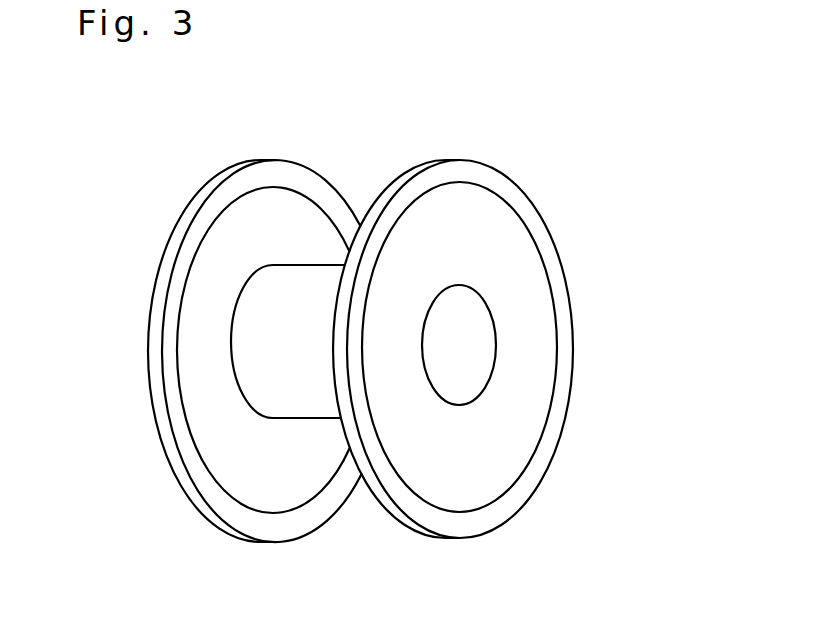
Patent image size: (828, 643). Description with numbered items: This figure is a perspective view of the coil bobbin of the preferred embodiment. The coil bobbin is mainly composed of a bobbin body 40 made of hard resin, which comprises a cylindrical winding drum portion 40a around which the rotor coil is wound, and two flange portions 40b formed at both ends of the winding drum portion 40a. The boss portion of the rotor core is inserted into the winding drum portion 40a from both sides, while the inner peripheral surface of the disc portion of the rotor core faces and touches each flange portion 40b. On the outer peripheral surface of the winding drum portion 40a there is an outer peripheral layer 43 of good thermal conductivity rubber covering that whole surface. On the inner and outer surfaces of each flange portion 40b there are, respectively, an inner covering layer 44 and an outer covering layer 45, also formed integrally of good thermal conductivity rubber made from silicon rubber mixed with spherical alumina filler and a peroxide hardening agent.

The bobbin body 40 is at (556, 211).
The winding drum portion 40a is at (482, 333).
The flange portion 40b is at (228, 166).
The outer peripheral layer 43 is at (260, 387).
The inner covering layer 44 is at (190, 315).
The outer covering layer 45 is at (533, 393).